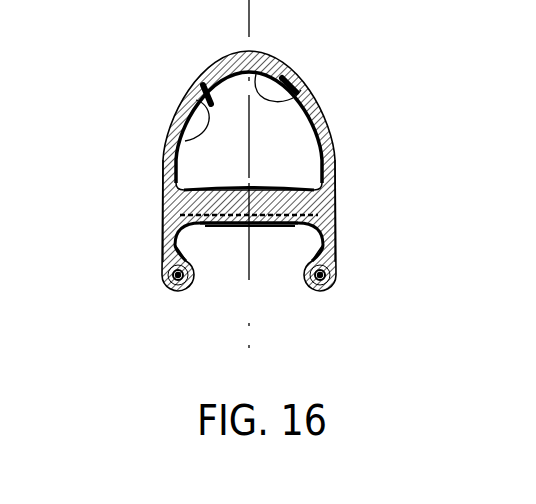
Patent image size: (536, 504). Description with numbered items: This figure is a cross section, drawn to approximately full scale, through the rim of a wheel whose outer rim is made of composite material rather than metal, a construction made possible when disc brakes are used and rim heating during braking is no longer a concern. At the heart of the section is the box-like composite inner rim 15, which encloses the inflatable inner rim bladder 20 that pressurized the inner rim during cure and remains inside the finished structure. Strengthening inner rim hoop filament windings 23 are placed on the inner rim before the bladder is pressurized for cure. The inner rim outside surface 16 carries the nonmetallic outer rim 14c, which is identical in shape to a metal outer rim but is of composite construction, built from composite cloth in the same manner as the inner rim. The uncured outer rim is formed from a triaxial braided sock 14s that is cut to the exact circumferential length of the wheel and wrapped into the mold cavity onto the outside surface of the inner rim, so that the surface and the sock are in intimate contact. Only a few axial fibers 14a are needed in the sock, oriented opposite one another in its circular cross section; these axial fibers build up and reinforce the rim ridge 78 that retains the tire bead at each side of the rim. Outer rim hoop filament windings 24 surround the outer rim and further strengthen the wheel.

The composite inner rim 15 is at (166, 158).
The inner rim outside surface 16 is at (334, 158).
The inflatable inner rim bladder 20 is at (194, 103).
The inner rim hoop filament windings 23 is at (302, 100).
The outer rim hoop filament windings 24 is at (245, 222).
The triaxial braided sock 14s is at (335, 238).
The nonmetallic outer rim 14c is at (163, 221).
The rim ridge 78 is at (178, 292).
The axial fibers 14a is at (327, 289).